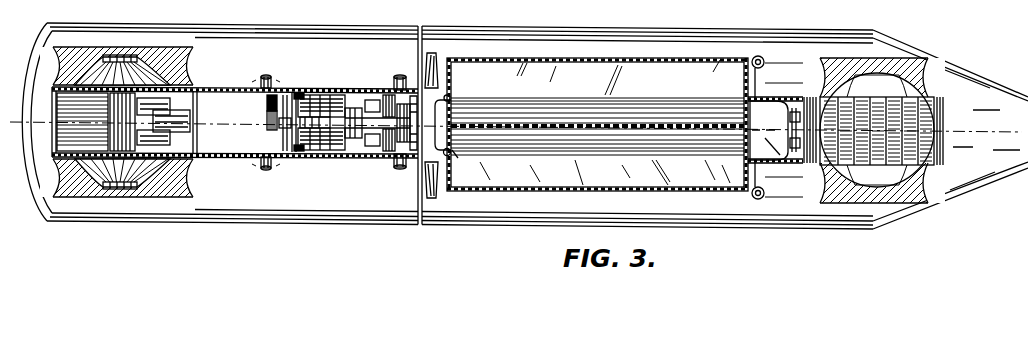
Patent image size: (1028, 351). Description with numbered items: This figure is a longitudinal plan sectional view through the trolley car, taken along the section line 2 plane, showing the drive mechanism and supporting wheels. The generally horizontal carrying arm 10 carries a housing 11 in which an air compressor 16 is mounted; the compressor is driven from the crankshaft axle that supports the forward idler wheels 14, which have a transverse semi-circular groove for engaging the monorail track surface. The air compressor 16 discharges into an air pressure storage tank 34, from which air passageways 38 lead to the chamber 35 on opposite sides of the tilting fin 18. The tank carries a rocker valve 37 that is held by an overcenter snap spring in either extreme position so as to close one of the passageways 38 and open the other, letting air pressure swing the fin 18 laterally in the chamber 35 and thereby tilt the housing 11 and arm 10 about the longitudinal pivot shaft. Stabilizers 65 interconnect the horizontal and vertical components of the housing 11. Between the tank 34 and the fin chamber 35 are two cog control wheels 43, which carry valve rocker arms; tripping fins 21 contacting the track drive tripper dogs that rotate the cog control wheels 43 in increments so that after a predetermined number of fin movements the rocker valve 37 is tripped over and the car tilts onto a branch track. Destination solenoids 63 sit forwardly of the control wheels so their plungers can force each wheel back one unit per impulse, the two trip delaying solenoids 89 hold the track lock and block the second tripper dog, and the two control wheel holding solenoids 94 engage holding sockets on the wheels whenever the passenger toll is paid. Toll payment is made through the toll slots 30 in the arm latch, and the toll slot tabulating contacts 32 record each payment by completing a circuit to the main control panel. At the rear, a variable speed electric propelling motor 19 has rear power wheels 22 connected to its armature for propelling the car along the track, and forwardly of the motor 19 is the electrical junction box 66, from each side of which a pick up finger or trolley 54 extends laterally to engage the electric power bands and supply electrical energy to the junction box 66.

The section line 2- 2 is at (10, 122).
The carrying arm 10 is at (523, 228).
The housing 11 is at (393, 226).
The forward idler wheels 14 is at (85, 52).
The air compressor 16 is at (195, 110).
The tilting fin 18 is at (625, 124).
The variable speed electric propelling motor 19 is at (944, 141).
The tripping fins 21 is at (432, 58).
The rear power wheels 22 is at (898, 70).
The toll slots 30 is at (600, 2).
The toll slot tabulating contacts 32 is at (530, 0).
The air pressure storage tank 34 is at (218, 138).
The chamber 35 is at (660, 78).
The rocker valve 37 is at (288, 121).
The air passageways 38 is at (450, 153).
The cog control wheels 43 is at (396, 80).
The pick up finger or trolley 54 is at (762, 57).
The destination solenoids 63 is at (330, 91).
The stabilizers 65 is at (261, 77).
The electrical junction box 66 is at (786, 101).
The trip delaying solenoids 89 is at (452, 106).
The control wheel holding solenoids 94 is at (343, 113).